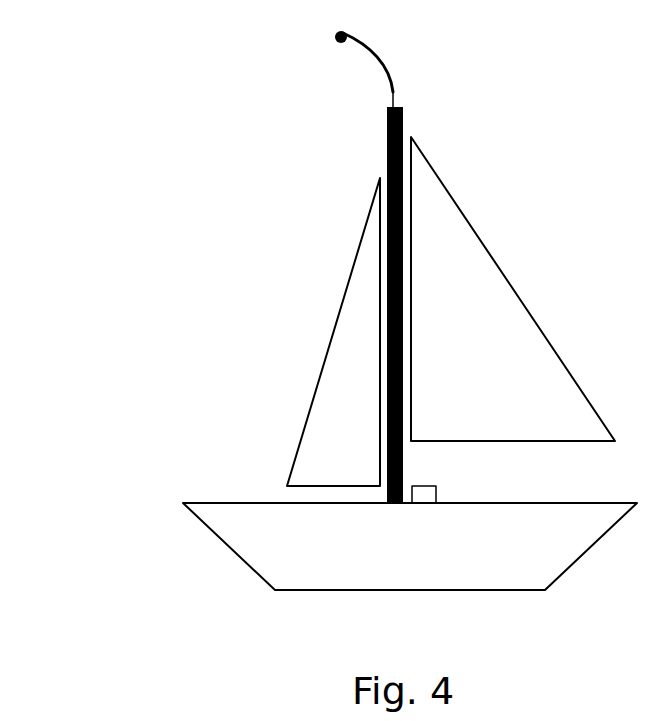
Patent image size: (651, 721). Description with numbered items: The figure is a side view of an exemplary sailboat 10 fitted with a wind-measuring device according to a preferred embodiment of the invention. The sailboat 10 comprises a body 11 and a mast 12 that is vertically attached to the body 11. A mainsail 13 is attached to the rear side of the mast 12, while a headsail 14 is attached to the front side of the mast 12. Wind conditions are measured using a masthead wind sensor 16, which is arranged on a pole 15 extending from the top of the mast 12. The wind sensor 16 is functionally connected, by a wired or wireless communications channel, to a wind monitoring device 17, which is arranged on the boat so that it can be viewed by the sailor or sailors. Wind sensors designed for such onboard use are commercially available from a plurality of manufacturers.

The sailboat 10 is at (137, 152).
The body 11 is at (220, 537).
The mast 12 is at (387, 141).
The mainsail 13 is at (493, 252).
The headsail 14 is at (332, 360).
The pole 15 is at (393, 90).
The masthead wind sensor 16 is at (336, 40).
The wind monitoring device 17 is at (437, 486).